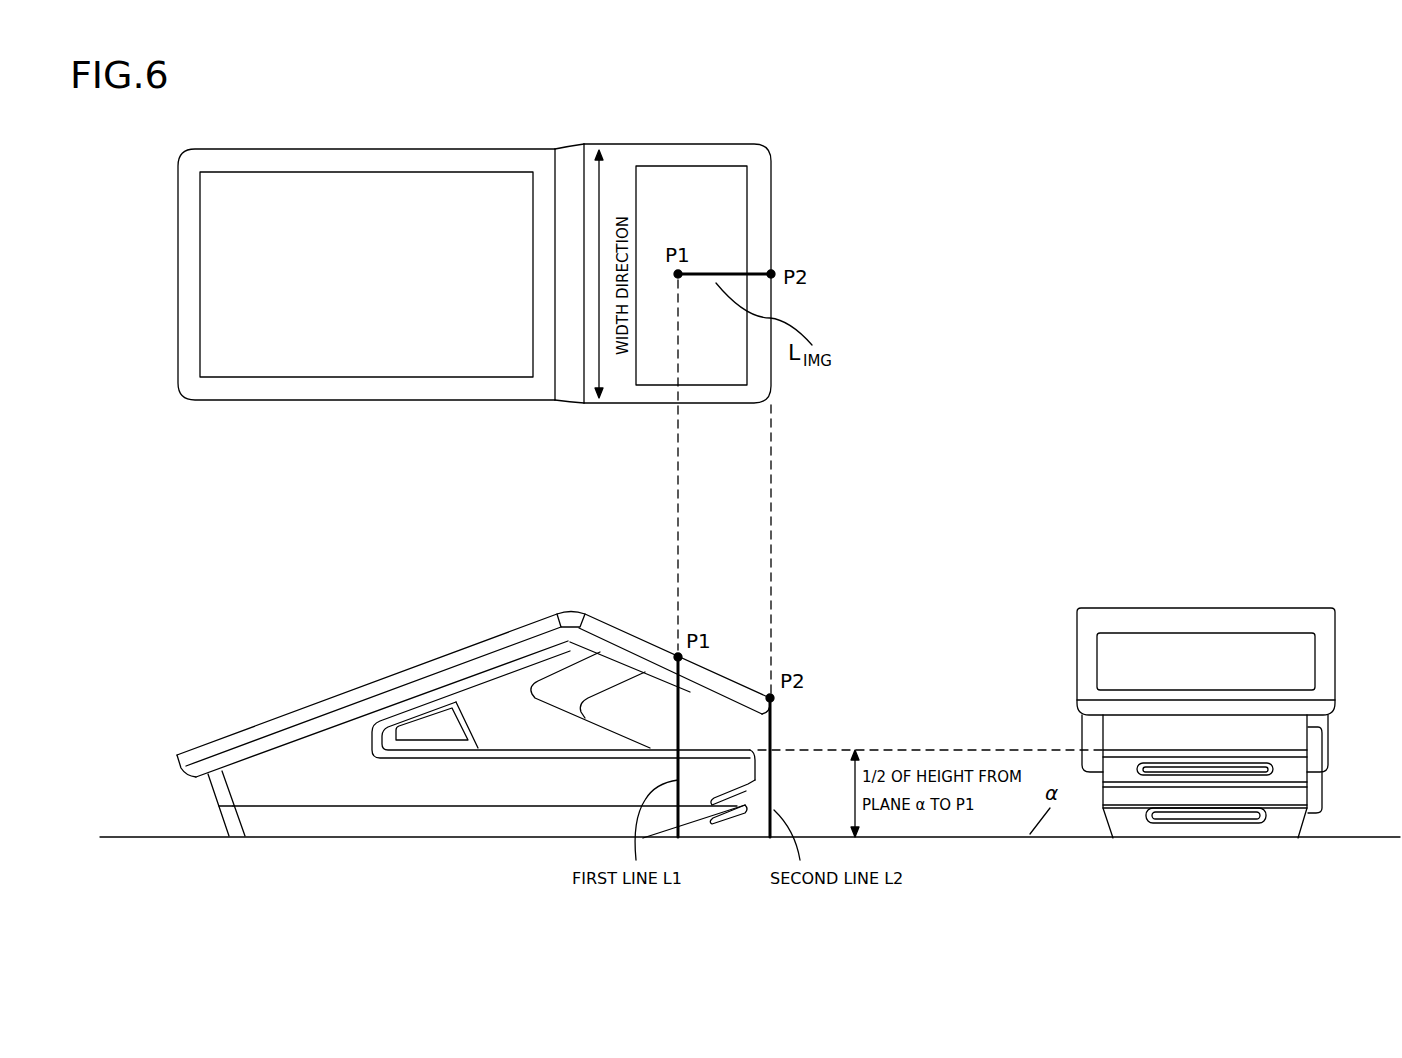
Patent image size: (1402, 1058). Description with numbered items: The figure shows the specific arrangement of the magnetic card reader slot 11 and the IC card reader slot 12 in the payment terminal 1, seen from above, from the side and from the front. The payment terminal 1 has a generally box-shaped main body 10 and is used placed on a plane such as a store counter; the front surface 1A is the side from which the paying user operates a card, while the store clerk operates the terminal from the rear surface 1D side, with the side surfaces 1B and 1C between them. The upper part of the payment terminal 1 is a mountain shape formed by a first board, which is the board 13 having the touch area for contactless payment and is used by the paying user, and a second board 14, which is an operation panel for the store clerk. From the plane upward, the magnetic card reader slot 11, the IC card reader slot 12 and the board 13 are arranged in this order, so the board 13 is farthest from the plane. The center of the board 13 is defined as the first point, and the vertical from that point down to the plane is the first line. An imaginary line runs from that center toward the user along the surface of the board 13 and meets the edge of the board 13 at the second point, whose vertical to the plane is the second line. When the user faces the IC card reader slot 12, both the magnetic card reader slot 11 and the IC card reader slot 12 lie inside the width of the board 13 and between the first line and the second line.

The payment terminal 1 is at (792, 150).
The main body 10 is at (646, 160).
The magnetic card reader slot 11 is at (755, 782).
The IC card reader slot 12 is at (750, 766).
The board having a touch area for contactless payment 13 is at (728, 208).
The second board 14 is at (315, 218).
The front surface 1A is at (860, 270).
The side surface 1B is at (432, 440).
The side surface 1C is at (432, 107).
The rear surface 1D is at (127, 270).